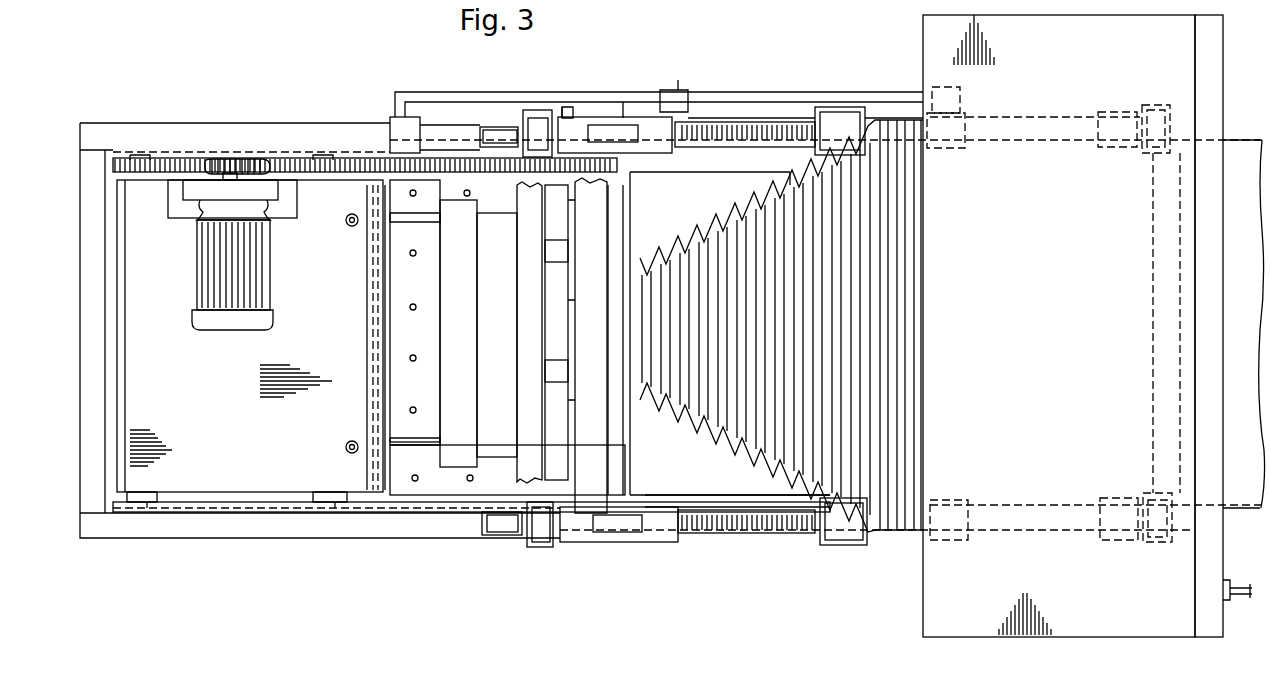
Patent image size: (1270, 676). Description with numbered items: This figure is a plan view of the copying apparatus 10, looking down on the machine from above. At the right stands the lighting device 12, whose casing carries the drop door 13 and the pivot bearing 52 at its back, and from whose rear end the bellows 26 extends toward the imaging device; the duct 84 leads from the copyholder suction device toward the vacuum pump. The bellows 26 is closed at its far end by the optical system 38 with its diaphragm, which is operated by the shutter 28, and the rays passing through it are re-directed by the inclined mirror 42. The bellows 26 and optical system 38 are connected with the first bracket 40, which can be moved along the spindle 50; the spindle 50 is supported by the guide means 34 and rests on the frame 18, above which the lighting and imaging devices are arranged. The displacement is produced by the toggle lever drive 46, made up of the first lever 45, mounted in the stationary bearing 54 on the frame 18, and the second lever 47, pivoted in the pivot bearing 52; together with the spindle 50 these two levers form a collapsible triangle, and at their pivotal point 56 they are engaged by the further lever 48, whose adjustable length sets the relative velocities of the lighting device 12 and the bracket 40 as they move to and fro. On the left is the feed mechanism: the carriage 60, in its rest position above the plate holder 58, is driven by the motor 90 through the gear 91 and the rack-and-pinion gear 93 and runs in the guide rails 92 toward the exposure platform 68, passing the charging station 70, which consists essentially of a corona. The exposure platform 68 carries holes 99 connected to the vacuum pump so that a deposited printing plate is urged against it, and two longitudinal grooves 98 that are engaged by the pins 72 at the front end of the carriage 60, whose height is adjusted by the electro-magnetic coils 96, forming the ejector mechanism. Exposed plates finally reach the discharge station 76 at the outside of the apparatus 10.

The apparatus 10 is at (374, 66).
The lighting device 12 is at (918, 62).
The drop door 13 is at (1195, 27).
The frame 18 is at (117, 120).
The bellows 26 is at (681, 440).
The shutter 28 is at (598, 352).
The guide means 34 is at (840, 113).
The optical system 38 is at (553, 255).
The first bracket 40 is at (608, 133).
The mirror 42 is at (450, 378).
The first lever 45 is at (560, 92).
The toggle lever drive 46 is at (675, 80).
The second lever 47 is at (827, 92).
The lever 48 is at (626, 100).
The spindle 50 is at (735, 125).
The pivot bearing 52 is at (965, 112).
The stationary bearing 54 is at (393, 130).
The pivotal point 56 is at (682, 90).
The plate holder 58 is at (185, 508).
The carriage 60 is at (218, 435).
The exposure platform 68 is at (410, 301).
The charging station 70 is at (378, 262).
The pins 72 is at (355, 212).
The discharge station 76 is at (1235, 160).
The duct 84 is at (1240, 598).
The motor 90 is at (200, 268).
The gear 91 is at (268, 164).
The guide rails 92 is at (165, 155).
The rack-and-pinion gear 93 is at (357, 160).
The electro-magnetic coils 96 is at (352, 226).
The grooves 98 is at (437, 219).
The holes 99 is at (470, 475).